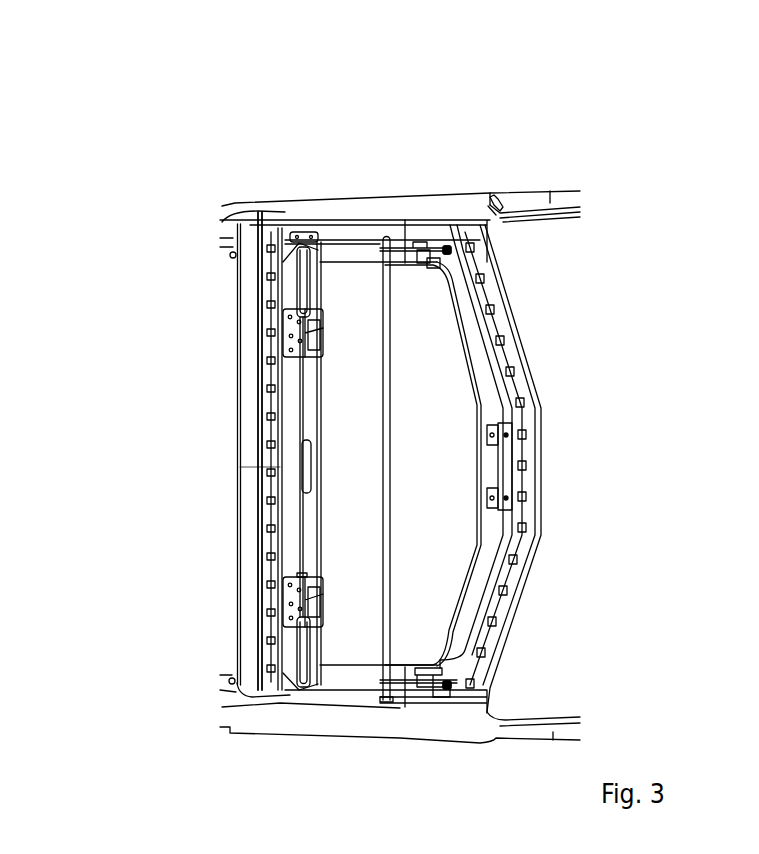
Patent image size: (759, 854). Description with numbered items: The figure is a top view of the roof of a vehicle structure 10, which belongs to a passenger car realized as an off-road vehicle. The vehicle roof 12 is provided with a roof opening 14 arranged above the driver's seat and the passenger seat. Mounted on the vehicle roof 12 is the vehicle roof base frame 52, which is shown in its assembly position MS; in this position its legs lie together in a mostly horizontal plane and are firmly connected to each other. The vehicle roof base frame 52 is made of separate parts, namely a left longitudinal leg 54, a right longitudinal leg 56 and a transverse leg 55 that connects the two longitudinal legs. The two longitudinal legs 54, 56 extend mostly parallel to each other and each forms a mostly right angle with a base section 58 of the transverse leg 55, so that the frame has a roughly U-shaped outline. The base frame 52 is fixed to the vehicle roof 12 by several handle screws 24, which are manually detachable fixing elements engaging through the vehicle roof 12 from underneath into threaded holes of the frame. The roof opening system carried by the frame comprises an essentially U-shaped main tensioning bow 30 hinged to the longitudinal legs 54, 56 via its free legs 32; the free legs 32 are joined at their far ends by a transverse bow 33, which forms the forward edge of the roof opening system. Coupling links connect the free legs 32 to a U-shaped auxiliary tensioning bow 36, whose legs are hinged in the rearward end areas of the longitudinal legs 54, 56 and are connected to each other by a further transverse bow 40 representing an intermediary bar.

The vehicle structure 10 is at (267, 196).
The vehicle roof 12 is at (307, 188).
The roof opening 14 is at (390, 220).
The handle screws 24 is at (423, 250).
The main tensioning bow 30 is at (435, 247).
The auxiliary tensioning bow 36 is at (435, 247).
The free legs 32 is at (335, 240).
The transverse bow 33 is at (302, 480).
The transverse bow 40 is at (390, 578).
The vehicle roof base frame 52 is at (496, 290).
The left longitudinal leg 54 is at (347, 698).
The transverse leg 55 is at (542, 431).
The right longitudinal leg 56 is at (357, 238).
The base section 58 is at (542, 488).
The assembly position MS is at (460, 220).